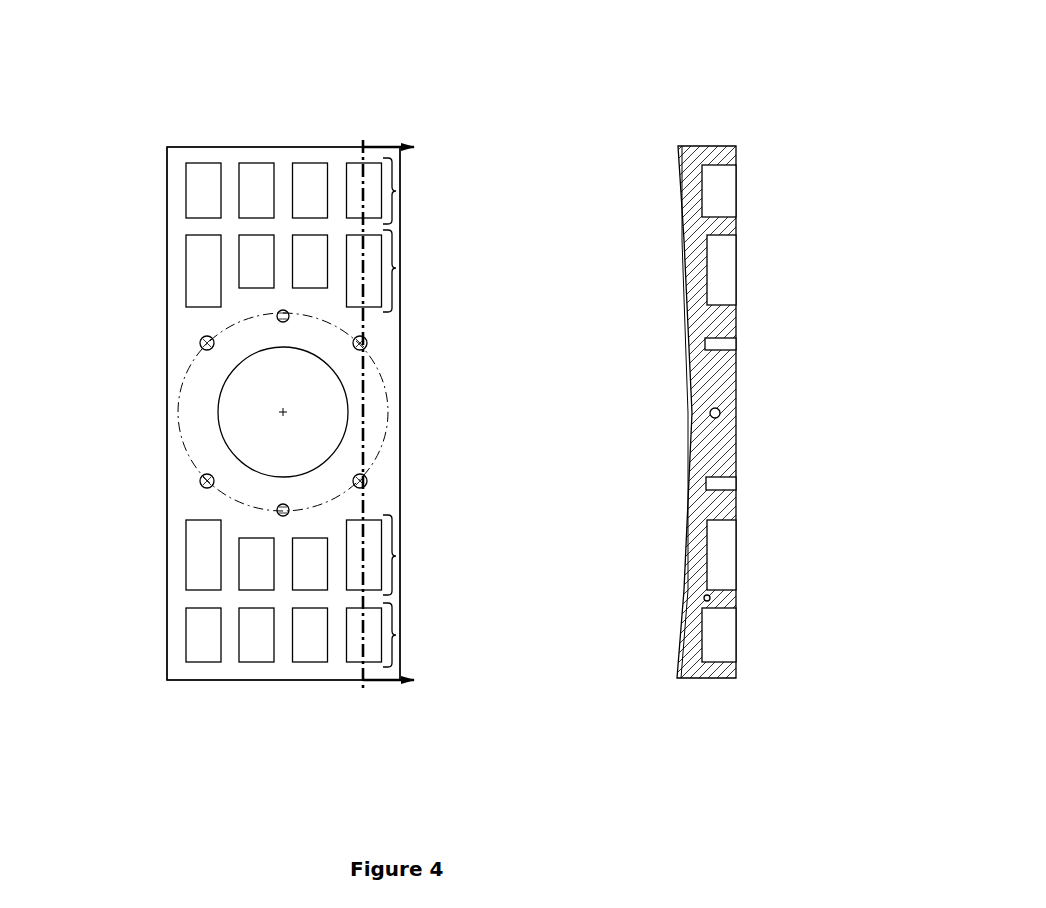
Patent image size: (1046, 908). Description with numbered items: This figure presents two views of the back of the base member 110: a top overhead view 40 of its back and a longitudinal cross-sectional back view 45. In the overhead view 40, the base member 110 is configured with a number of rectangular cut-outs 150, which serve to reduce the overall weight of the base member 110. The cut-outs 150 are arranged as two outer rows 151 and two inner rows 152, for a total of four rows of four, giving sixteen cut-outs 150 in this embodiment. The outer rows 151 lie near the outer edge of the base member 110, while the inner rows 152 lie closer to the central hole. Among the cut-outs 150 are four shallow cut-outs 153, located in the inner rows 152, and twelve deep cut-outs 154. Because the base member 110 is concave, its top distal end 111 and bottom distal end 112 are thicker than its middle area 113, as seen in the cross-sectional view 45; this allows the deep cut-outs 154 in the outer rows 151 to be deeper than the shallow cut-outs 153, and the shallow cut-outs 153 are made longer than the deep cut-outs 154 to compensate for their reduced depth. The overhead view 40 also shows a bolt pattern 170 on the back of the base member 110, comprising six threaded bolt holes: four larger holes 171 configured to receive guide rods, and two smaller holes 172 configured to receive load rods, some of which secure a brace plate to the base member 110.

The top overhead view 40 is at (284, 44).
The longitudinal cross-sectional back view 45 is at (706, 100).
The base member 110 is at (164, 641).
The top distal end 111 is at (755, 167).
The bottom distal end 112 is at (748, 665).
The middle area 113 is at (798, 417).
The rectangular cut-outs 150 is at (193, 678).
The outer rows 151 is at (396, 192).
The inner rows 152 is at (396, 268).
The shallow cut-outs 153 is at (349, 265).
The deep cut-outs 154 is at (350, 183).
The bolt pattern 170 is at (397, 408).
The larger holes 171 is at (201, 473).
The smaller holes 172 is at (289, 502).